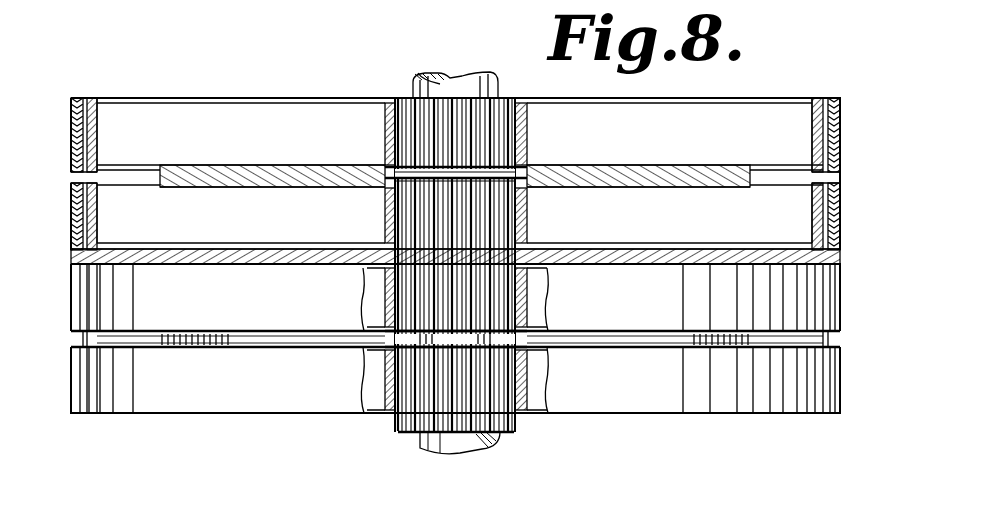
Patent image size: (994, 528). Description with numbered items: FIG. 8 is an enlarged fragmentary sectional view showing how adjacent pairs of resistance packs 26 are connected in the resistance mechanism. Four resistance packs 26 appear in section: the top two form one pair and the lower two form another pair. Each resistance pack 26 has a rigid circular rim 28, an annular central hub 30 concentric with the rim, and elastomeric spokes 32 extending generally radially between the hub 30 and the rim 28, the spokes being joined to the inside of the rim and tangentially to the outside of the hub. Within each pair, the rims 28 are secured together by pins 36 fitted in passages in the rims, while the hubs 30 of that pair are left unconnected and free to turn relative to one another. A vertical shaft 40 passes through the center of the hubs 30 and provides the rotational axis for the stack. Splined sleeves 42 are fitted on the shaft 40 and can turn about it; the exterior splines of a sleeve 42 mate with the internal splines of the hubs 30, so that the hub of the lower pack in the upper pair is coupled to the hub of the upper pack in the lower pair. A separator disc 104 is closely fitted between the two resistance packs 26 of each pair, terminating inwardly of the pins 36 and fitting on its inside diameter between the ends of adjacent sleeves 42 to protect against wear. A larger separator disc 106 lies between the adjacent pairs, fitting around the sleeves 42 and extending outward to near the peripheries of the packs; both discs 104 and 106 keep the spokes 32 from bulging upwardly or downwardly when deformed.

The resistance pack 26 is at (776, 100).
The rim 28 is at (840, 135).
The hub 30 is at (530, 143).
The elastomeric spoke 32 is at (243, 157).
The pin 36 is at (84, 177).
The vertical shaft 40 is at (422, 446).
The splined sleeve 42 is at (497, 115).
The separator disc 104 is at (185, 162).
The larger separator disc 106 is at (237, 257).